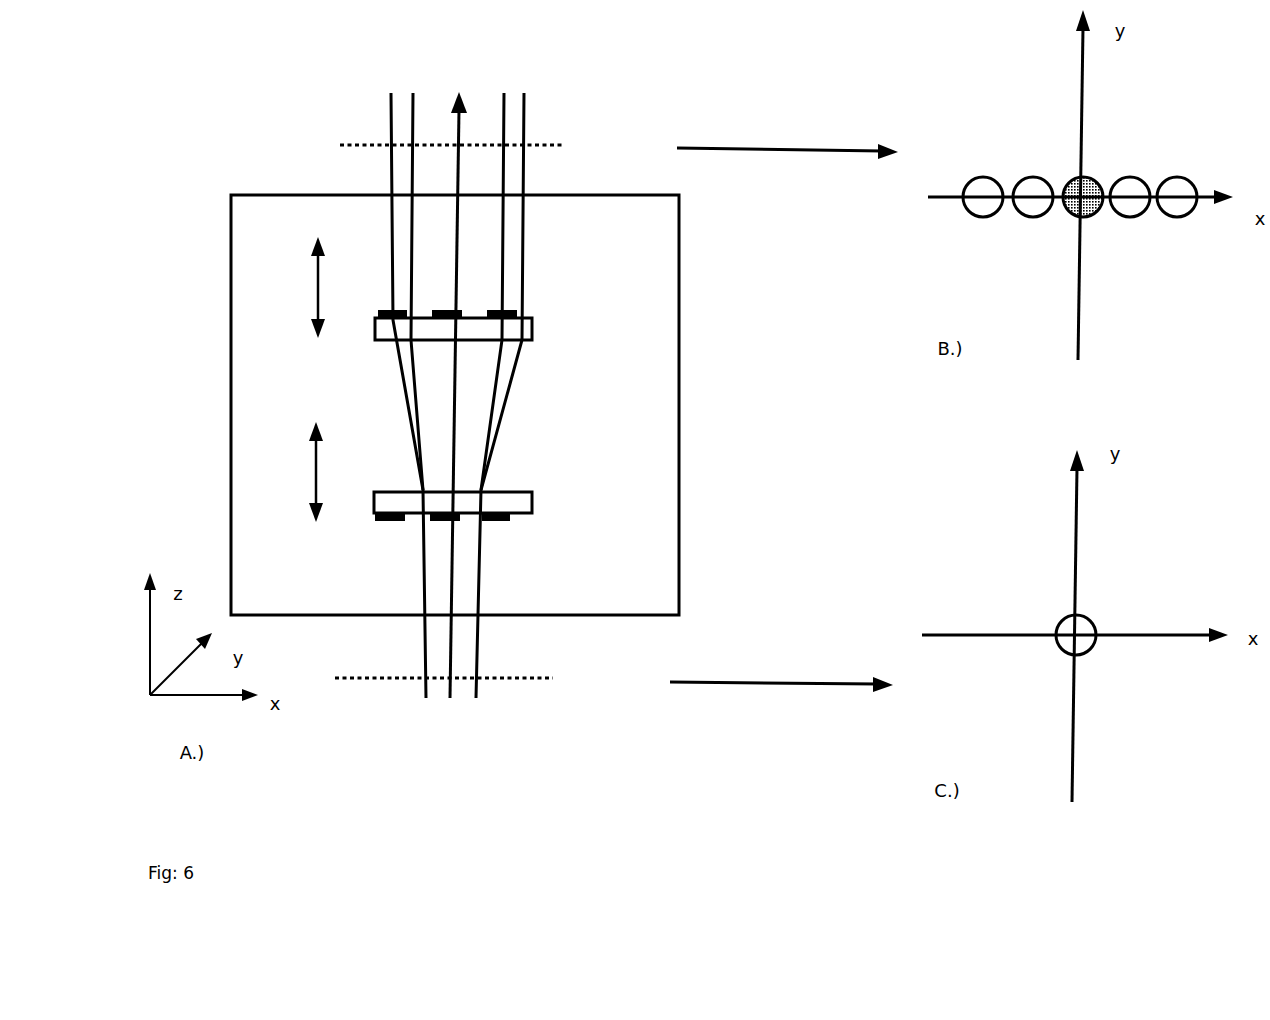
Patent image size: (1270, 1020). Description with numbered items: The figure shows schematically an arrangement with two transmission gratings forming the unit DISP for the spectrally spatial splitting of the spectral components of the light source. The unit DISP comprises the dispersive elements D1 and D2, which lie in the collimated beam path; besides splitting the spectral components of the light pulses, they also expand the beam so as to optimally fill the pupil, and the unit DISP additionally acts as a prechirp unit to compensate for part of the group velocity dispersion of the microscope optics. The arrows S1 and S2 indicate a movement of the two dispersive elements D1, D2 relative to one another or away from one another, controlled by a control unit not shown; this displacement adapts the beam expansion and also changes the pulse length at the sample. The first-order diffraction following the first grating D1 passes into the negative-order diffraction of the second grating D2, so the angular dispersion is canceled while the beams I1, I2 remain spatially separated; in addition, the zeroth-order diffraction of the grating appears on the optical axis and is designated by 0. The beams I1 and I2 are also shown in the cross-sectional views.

The unit for spectrally spatial splitting DISP is at (455, 424).
The first image light beams I1 is at (783, 401).
The second image light beams I2 is at (780, 268).
The first dispersive element D1 is at (480, 506).
The second dispersive element D2 is at (482, 328).
The arrow indicating movement S1 is at (299, 472).
The arrow indicating movement S2 is at (302, 287).
The zeroth-order diffraction 0 is at (1050, 220).